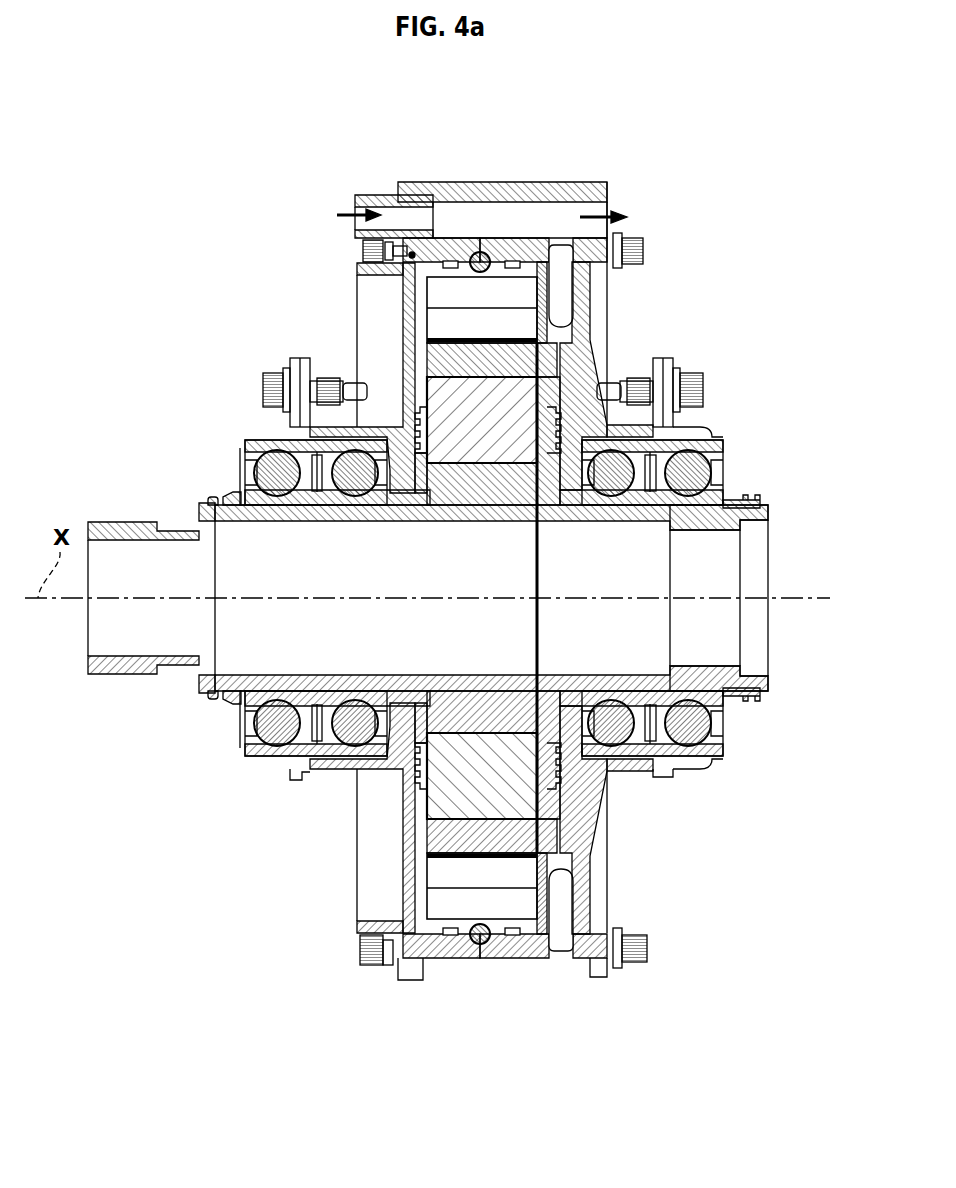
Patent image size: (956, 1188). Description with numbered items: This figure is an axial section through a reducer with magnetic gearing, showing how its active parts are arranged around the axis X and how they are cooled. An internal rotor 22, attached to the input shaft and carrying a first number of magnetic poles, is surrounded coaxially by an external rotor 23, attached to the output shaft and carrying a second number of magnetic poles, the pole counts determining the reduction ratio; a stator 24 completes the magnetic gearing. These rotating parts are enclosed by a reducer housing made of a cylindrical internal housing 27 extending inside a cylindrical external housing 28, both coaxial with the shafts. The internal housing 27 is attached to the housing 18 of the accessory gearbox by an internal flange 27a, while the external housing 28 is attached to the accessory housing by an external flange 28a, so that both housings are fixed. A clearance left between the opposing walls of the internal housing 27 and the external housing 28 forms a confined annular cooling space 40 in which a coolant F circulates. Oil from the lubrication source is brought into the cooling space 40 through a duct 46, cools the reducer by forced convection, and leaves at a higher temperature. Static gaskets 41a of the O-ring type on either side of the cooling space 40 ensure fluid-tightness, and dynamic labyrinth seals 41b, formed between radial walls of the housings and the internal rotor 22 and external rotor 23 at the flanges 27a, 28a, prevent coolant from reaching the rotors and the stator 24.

The housing of the AGB 18 is at (258, 440).
The internal rotor 22 is at (203, 514).
The external rotor 23 is at (715, 525).
The stator 24 is at (483, 777).
The internal housing 27 is at (410, 260).
The internal flange 27a is at (350, 432).
The external housing 28 is at (585, 258).
The external flange 28a is at (628, 432).
The cooling space 40 is at (481, 252).
The static gasket 41a is at (449, 260).
The dynamic seal 41b is at (400, 410).
The duct 46 is at (455, 206).